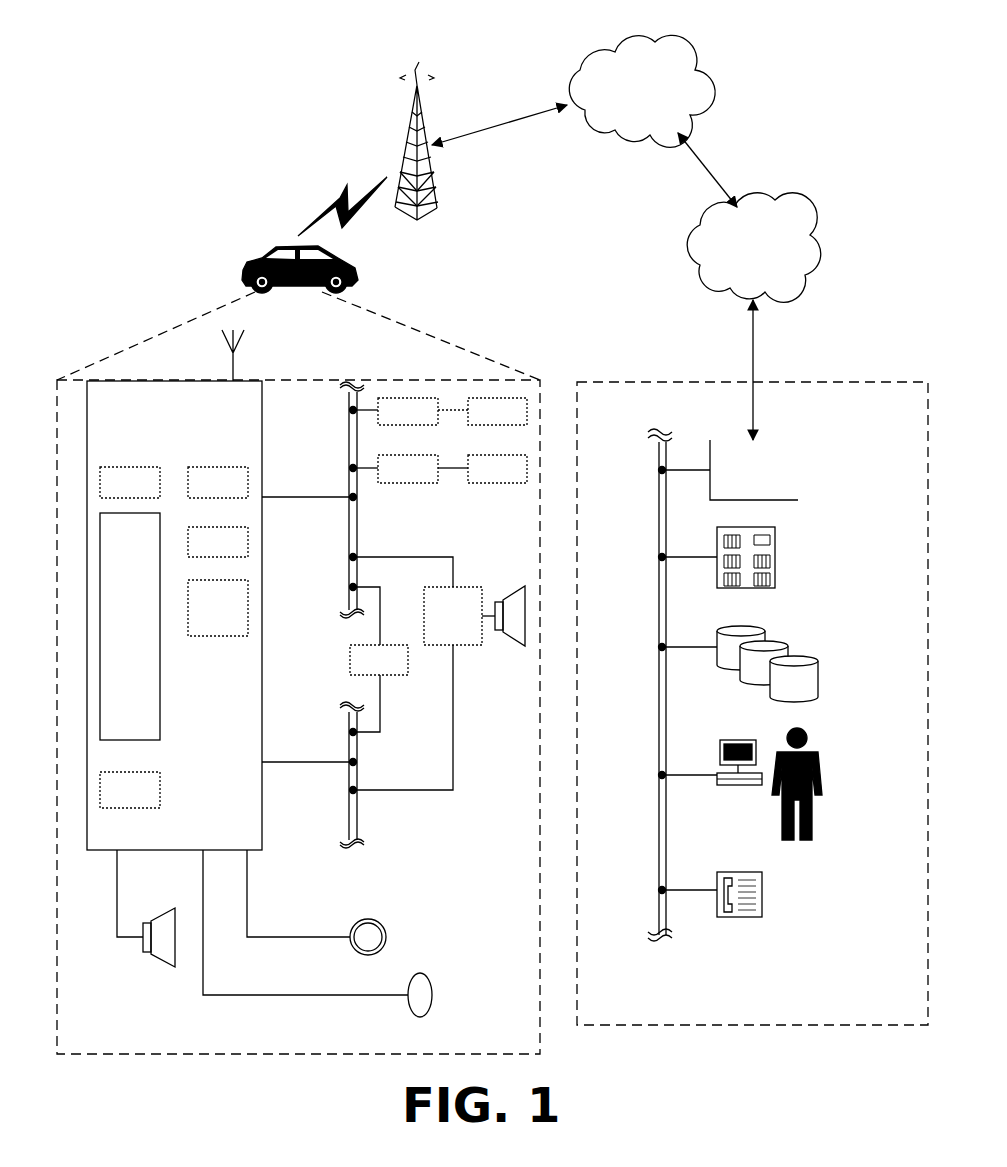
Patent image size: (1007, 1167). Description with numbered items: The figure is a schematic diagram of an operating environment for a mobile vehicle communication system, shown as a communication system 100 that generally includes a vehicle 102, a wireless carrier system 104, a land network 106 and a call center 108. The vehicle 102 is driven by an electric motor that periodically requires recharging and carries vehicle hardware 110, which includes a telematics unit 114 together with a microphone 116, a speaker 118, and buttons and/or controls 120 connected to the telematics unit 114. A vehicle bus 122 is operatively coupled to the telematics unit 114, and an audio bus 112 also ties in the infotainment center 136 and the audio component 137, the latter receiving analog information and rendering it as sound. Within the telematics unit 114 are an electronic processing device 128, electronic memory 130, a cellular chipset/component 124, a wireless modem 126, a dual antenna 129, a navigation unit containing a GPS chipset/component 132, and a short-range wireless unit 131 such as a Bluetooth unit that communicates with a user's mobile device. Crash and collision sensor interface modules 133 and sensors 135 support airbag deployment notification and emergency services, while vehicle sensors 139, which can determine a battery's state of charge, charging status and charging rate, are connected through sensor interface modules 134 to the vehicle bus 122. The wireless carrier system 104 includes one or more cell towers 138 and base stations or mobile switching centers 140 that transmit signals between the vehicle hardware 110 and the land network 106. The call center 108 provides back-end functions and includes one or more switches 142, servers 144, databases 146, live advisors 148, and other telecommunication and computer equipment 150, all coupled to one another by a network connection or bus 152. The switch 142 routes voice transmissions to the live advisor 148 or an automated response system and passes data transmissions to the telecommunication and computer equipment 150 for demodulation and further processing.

The communication system 100 is at (468, 29).
The vehicle 102 is at (253, 265).
The wireless carrier system 104 is at (543, 206).
The land network 106 is at (754, 248).
The call center 108 is at (753, 1025).
The vehicle hardware 110 is at (262, 1054).
The audio bus 112 is at (349, 815).
The telematics unit 114 is at (262, 695).
The microphone 116 is at (423, 972).
The speaker 118 is at (158, 958).
The buttons and/or controls 120 is at (366, 920).
The vehicle bus 122 is at (358, 545).
The cellular chipset/component 124 is at (130, 482).
The wireless modem 126 is at (218, 482).
The electronic processing device 128 is at (130, 626).
The dual antenna 129 is at (238, 378).
The electronic memory 130 is at (130, 790).
The short-range wireless unit 131 is at (218, 608).
The GPS chipset/component 132 is at (218, 542).
The crash and/or collision sensor interface modules 133 is at (408, 411).
The sensor interface modules 134 is at (408, 469).
The sensors 135 is at (497, 411).
The infotainment center 136 is at (379, 660).
The audio component 137 is at (474, 616).
The cell tower 138 is at (426, 117).
The vehicle sensors 139 is at (497, 469).
The mobile switching center 140 is at (642, 91).
The switch 142 is at (732, 470).
The server 144 is at (775, 537).
The database 146 is at (790, 652).
The live advisor 148 is at (812, 752).
The telecommunication and computer equipment 150 is at (762, 882).
The network connection or bus 152 is at (659, 696).